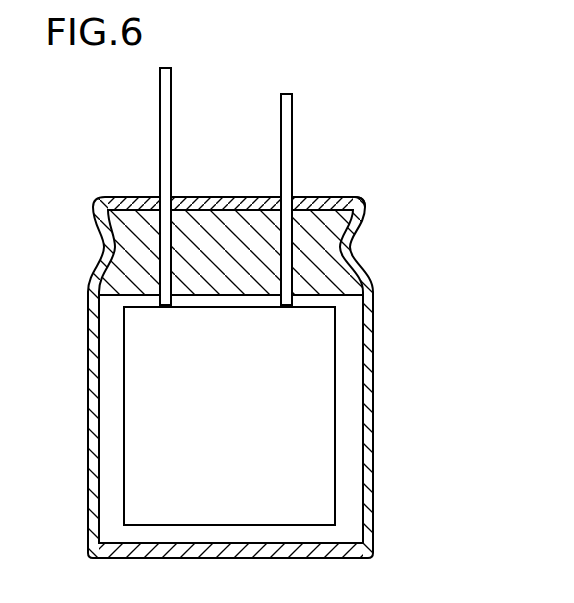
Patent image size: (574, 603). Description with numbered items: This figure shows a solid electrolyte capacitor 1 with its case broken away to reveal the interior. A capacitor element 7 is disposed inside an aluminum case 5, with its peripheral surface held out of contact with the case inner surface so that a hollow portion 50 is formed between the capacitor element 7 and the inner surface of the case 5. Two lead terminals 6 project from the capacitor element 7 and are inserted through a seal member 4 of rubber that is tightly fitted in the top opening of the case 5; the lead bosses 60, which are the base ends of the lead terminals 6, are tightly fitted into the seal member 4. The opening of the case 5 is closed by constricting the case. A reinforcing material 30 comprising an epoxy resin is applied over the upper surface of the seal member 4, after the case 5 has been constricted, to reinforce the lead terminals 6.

The solid electrolyte capacitor 1 is at (403, 193).
The seal member 4 is at (216, 227).
The case 5 is at (374, 364).
The lead terminals 6 is at (161, 92).
The capacitor element 7 is at (303, 440).
The reinforcing material 30 is at (317, 197).
The hollow portion 50 is at (348, 497).
The lead bosses 60 is at (165, 246).